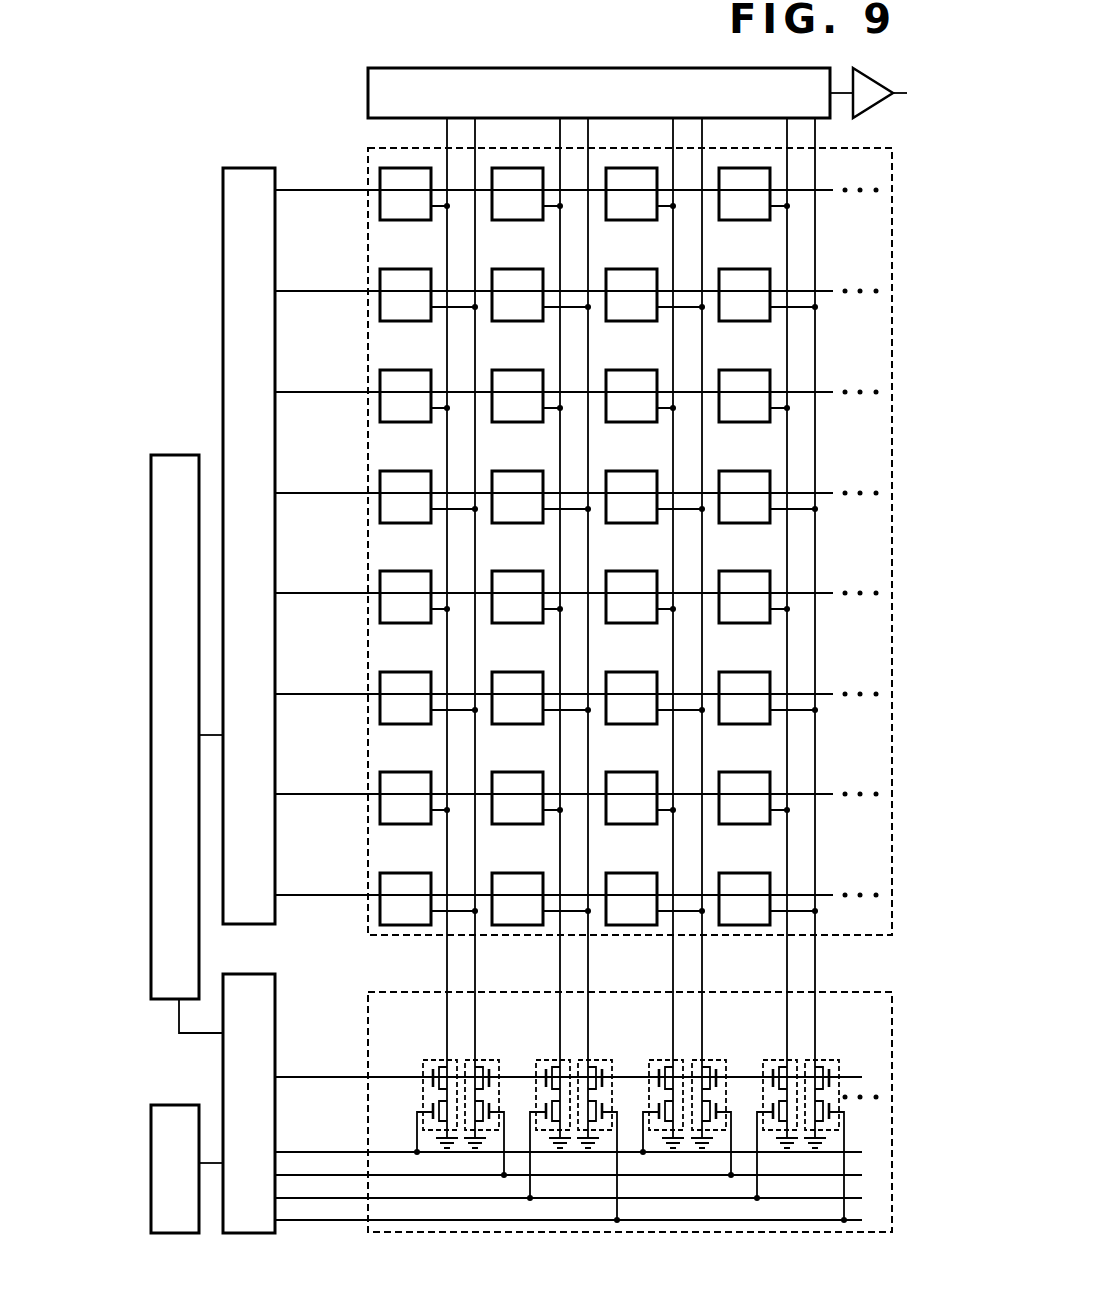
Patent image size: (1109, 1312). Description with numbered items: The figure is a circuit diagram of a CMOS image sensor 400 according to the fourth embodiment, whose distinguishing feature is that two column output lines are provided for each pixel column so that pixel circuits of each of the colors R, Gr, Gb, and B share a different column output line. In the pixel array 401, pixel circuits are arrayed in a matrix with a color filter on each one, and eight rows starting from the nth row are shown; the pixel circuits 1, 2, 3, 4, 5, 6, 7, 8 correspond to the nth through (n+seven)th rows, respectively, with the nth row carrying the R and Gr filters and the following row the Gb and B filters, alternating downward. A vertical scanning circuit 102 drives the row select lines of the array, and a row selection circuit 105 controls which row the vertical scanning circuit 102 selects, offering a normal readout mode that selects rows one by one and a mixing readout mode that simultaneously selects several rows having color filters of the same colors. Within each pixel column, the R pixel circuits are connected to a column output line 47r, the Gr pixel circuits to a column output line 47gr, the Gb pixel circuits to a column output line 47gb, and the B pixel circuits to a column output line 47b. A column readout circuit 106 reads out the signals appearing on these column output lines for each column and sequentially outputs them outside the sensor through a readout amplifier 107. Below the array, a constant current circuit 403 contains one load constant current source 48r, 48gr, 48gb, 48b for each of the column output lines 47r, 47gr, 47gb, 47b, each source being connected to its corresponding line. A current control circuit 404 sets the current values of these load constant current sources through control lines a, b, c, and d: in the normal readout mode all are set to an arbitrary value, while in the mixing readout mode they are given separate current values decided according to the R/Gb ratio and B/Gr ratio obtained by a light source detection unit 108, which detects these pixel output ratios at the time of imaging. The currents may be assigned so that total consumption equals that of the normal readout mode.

The CMOS image sensor 400 is at (226, 80).
The column readout circuit 106 is at (368, 90).
The readout amplifier 107 is at (880, 110).
The pixel array 401 is at (368, 157).
The vertical scanning circuit 102 is at (223, 227).
The row selection circuit 105 is at (172, 455).
The light source detection unit 108 is at (151, 1152).
The current control circuit 404 is at (247, 1223).
The constant current circuit 403 is at (368, 1113).
The pixel circuit 1 is at (413, 220).
The pixel circuit 2 is at (413, 321).
The pixel circuit 3 is at (413, 422).
The pixel circuit 4 is at (413, 523).
The pixel circuit 5 is at (413, 623).
The pixel circuit 6 is at (413, 724).
The pixel circuit 7 is at (423, 824).
The pixel circuit 8 is at (389, 873).
The column output line 47r is at (447, 955).
The column output line 47gb is at (477, 955).
The column output line 47b is at (560, 978).
The column output line 47gr is at (590, 978).
The load constant current source 48r is at (430, 1060).
The load constant current source 48gr is at (488, 1060).
The load constant current source 48b is at (548, 1060).
The load constant current source 48gb is at (604, 1060).